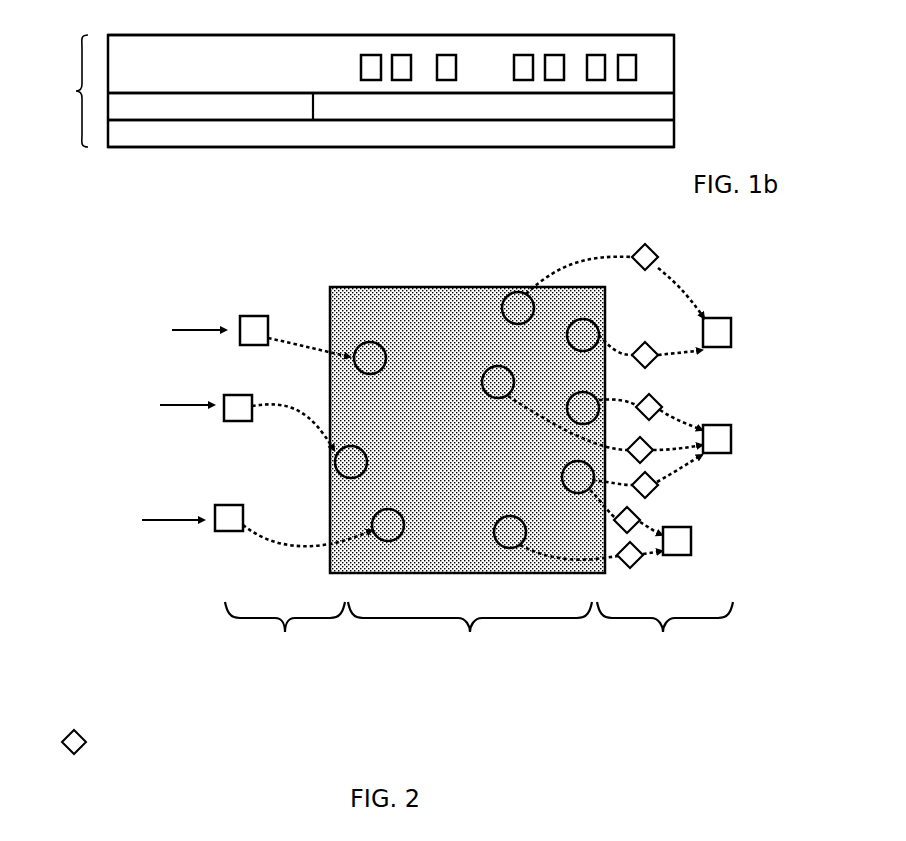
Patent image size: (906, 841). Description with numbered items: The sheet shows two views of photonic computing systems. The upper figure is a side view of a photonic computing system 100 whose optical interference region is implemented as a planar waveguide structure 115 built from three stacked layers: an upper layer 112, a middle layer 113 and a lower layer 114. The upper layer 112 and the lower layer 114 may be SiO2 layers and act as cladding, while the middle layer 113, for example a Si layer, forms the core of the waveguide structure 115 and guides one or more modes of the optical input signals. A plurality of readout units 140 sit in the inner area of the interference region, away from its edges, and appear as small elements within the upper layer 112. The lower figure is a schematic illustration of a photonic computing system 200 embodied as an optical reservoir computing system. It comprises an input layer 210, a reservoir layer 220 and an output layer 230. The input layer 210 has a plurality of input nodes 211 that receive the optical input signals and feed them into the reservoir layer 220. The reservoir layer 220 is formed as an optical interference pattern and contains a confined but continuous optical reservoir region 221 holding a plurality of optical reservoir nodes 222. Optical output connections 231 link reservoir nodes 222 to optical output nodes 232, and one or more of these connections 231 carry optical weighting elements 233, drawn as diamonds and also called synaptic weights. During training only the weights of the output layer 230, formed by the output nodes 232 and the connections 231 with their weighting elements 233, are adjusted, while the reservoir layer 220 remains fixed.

In FIG. 1b, the photonic computing system 100 is at (818, 33).
In FIG. 1b, the upper layer 112 is at (652, 58).
In FIG. 1b, the middle layer 113 is at (660, 100).
In FIG. 1b, the lower layer 114 is at (664, 130).
In FIG. 1b, the planar waveguide structure 115 is at (76, 91).
In FIG. 1b, the readout units 140 is at (402, 56).
In FIG. 2, the photonic computing system 200 is at (805, 779).
In FIG. 2, the input layer 210 is at (312, 700).
In FIG. 2, the input nodes 211 is at (256, 320).
In FIG. 2, the reservoir layer 220 is at (502, 700).
In FIG. 2, the optical reservoir region 221 is at (422, 302).
In FIG. 2, the optical reservoir nodes 222 is at (566, 478).
In FIG. 2, the output layer 230 is at (725, 700).
In FIG. 2, the optical output connections 231 is at (562, 270).
In FIG. 2, the optical output nodes 232 is at (720, 326).
In FIG. 2, the optical weighting elements 233 is at (645, 250).